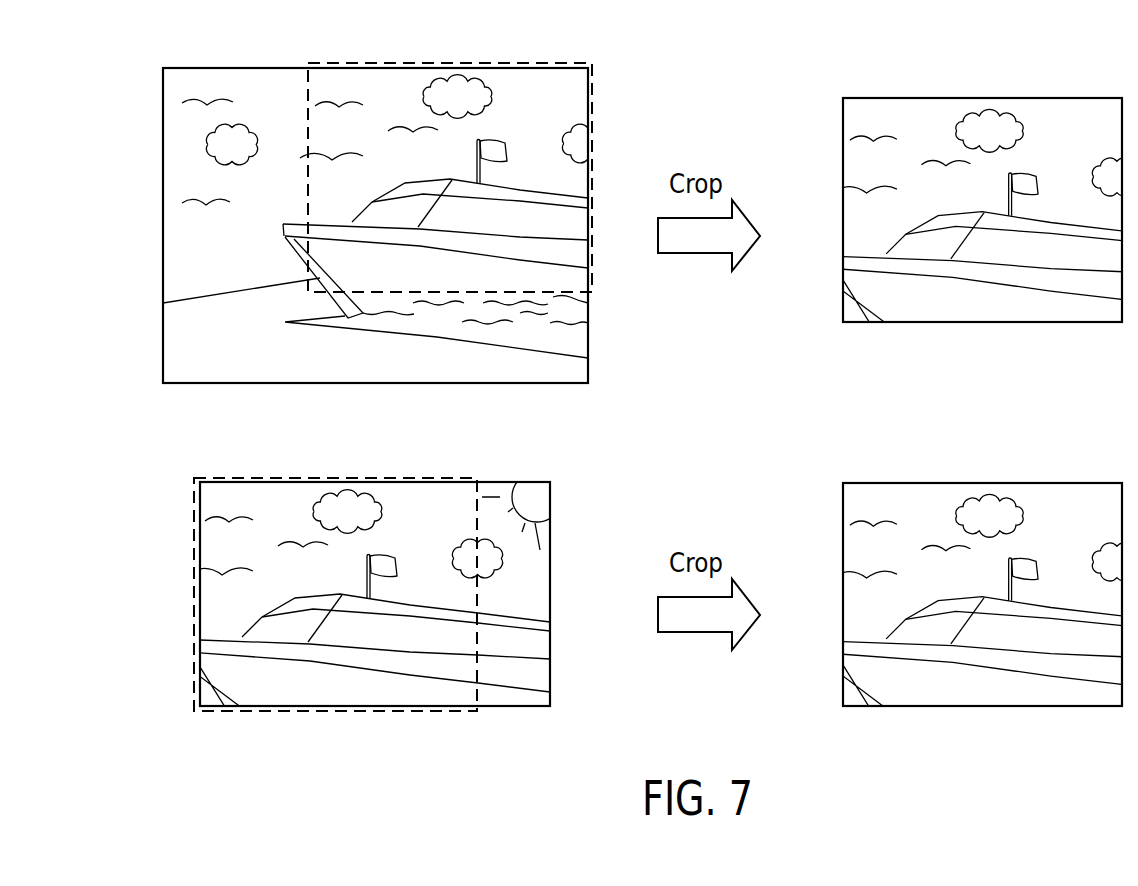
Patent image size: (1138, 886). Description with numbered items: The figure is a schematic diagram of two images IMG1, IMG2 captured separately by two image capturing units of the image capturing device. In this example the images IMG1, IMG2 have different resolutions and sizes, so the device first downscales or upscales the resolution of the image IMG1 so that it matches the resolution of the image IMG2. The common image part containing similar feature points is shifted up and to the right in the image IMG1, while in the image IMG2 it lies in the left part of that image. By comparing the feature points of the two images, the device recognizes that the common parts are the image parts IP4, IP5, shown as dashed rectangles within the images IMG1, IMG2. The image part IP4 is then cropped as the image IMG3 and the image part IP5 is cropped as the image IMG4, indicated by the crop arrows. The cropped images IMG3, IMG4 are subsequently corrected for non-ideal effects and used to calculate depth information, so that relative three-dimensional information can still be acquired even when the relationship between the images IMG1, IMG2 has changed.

The image IMG1 is at (417, 246).
The image IMG2 is at (317, 615).
The image IMG3 is at (929, 241).
The image IMG4 is at (929, 626).
The image part IP4 is at (381, 62).
The image part IP5 is at (289, 477).